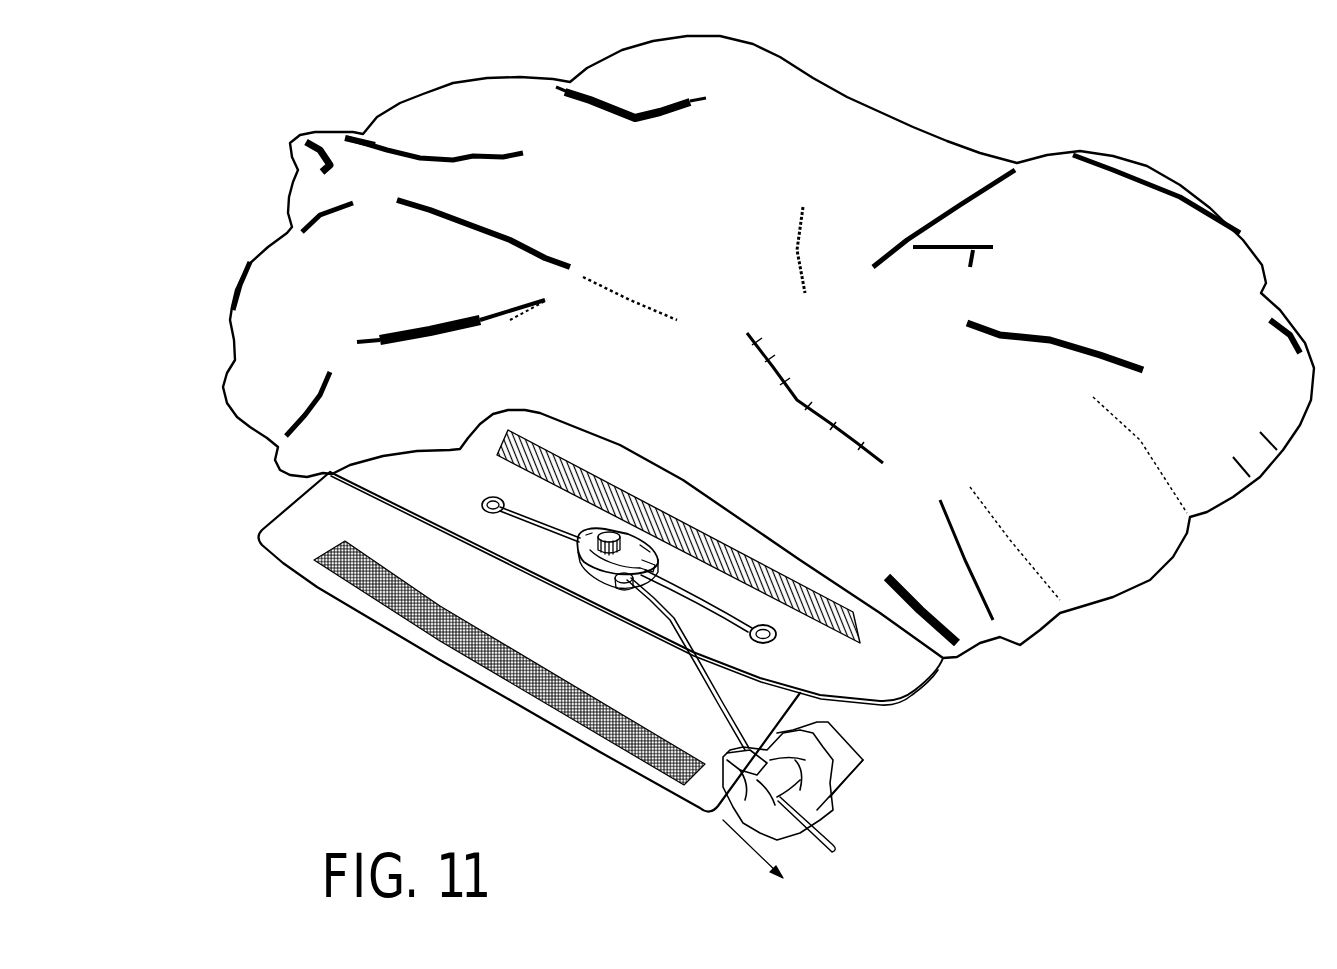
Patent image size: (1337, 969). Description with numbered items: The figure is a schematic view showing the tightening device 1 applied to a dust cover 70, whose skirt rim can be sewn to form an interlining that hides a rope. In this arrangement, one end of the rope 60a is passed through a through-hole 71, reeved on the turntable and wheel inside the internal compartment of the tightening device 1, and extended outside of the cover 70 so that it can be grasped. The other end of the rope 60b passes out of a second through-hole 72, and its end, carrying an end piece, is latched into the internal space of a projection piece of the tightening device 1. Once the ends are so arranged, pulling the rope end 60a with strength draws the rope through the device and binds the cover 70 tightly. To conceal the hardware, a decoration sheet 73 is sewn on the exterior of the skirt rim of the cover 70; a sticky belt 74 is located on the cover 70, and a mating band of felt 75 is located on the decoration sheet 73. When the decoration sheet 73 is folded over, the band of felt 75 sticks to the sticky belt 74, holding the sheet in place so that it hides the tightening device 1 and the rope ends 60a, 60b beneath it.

The tightening device 1 is at (620, 597).
The rope end 60a is at (770, 582).
The rope end 60b is at (537, 515).
The dust cover 70 is at (860, 143).
The through-hole 71 is at (775, 643).
The through-hole 72 is at (420, 470).
The decoration sheet 73 is at (293, 543).
The sticky belt 74 is at (710, 553).
The band of felt 75 is at (377, 580).